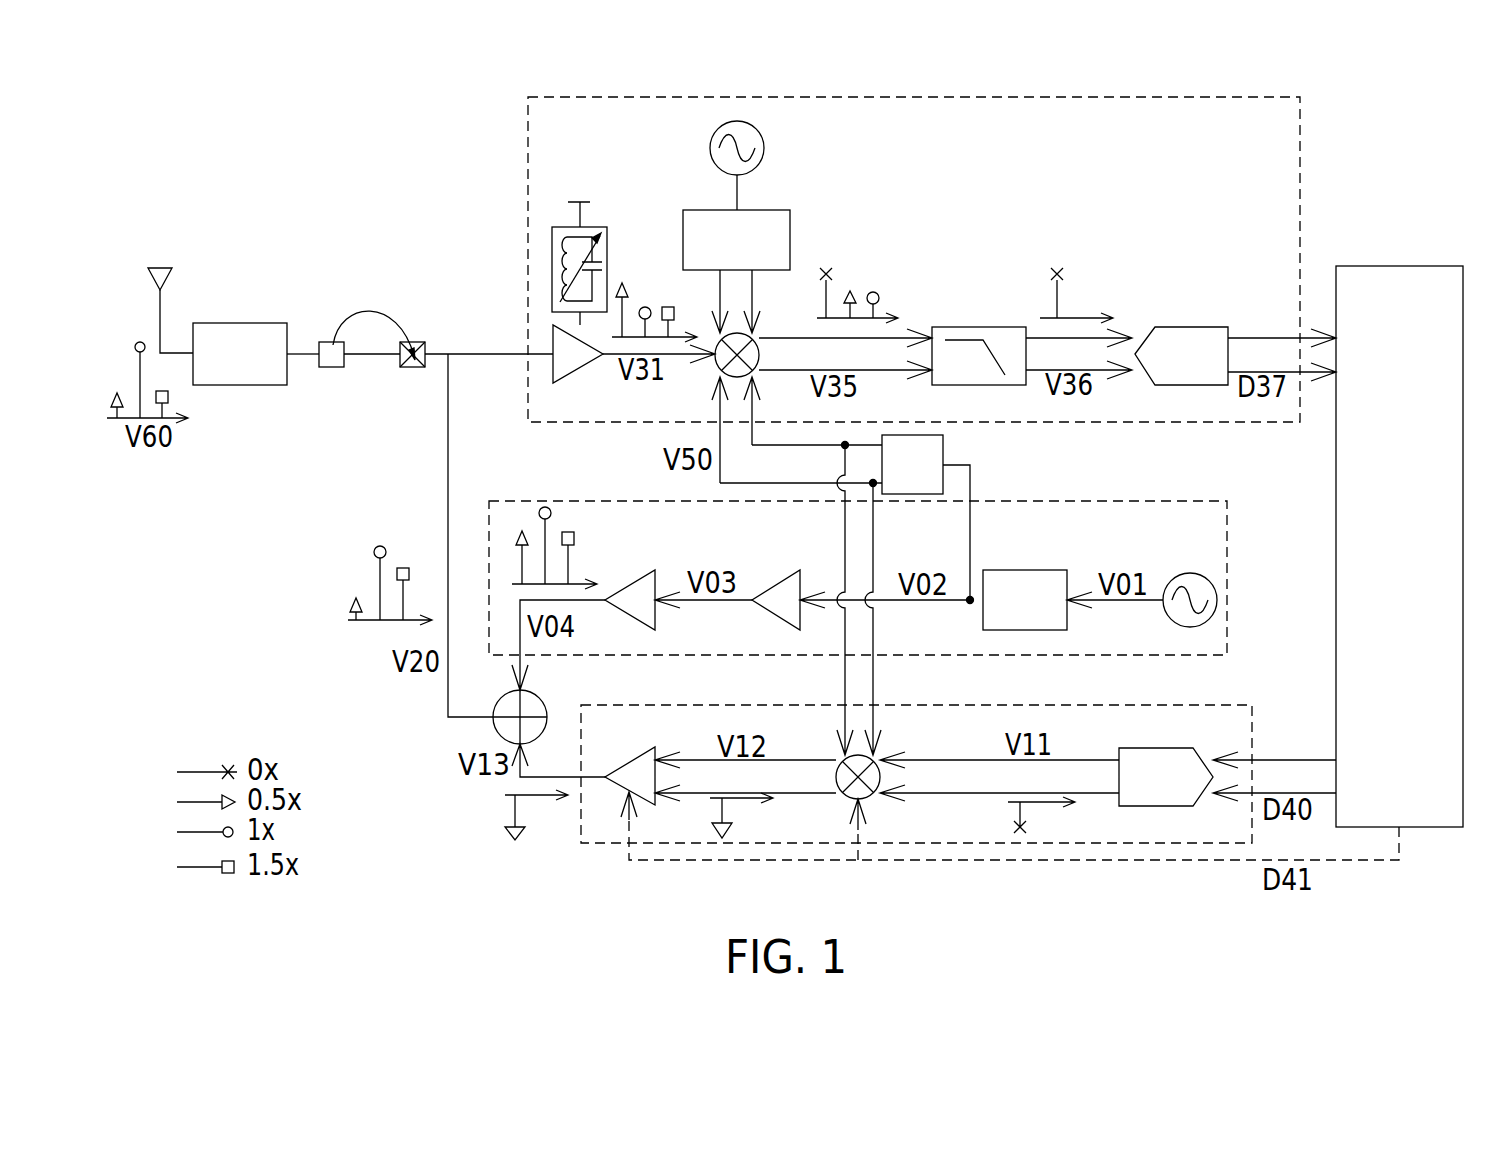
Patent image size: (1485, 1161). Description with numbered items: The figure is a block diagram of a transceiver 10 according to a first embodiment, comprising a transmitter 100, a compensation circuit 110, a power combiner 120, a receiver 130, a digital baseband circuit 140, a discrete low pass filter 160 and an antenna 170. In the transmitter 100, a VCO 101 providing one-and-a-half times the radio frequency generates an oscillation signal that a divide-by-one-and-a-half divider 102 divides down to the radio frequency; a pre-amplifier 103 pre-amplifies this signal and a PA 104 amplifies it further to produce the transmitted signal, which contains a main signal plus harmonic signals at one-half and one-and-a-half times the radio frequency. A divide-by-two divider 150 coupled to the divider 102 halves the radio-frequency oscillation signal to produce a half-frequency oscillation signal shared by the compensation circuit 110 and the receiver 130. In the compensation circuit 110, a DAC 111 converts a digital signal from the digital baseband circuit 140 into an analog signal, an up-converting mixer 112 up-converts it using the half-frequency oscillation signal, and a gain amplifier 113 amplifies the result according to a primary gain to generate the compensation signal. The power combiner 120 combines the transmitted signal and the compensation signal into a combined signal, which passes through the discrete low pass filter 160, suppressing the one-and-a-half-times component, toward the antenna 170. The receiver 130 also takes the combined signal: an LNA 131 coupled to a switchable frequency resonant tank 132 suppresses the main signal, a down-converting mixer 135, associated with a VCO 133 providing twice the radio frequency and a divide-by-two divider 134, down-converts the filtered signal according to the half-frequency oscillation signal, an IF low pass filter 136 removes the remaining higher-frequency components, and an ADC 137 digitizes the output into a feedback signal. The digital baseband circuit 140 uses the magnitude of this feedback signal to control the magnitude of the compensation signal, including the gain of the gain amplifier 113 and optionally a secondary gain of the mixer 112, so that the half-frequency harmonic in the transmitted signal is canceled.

The transceiver 10 is at (292, 150).
The transmitter 100 is at (1137, 501).
The 1.5×frf VCO 101 is at (1190, 573).
The divided-by-1.5 divider 102 is at (1025, 570).
The pre-amplifier 103 is at (777, 586).
The PA 104 is at (632, 586).
The compensation circuit 110 is at (1240, 705).
The digital-to-analog converter (DAC) 111 is at (1148, 806).
The up-converting mixer 112 is at (843, 795).
The gain amplifier 113 is at (630, 760).
The power combiner 120 is at (543, 703).
The receiver 130 is at (528, 158).
The low-noise amplifier (LNA) 131 is at (578, 367).
The switchable frequency resonant tank 132 is at (601, 227).
The 2×frf VCO 133 is at (765, 149).
The divided-by-2 divider 134 is at (790, 242).
The down-converting mixer 135 is at (753, 342).
The IF low pass filter 136 is at (980, 327).
The analog-to-digital converter (ADC) 137 is at (1195, 327).
The digital baseband circuit 140 is at (1400, 266).
The divided-by-2 divider 150 is at (943, 445).
The discrete low pass filter 160 is at (240, 323).
The antenna 170 is at (161, 268).